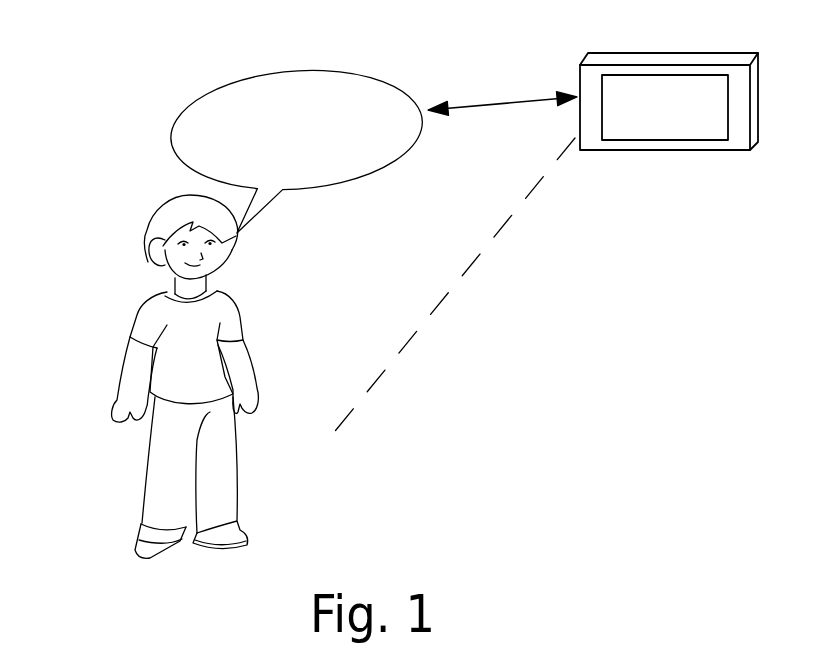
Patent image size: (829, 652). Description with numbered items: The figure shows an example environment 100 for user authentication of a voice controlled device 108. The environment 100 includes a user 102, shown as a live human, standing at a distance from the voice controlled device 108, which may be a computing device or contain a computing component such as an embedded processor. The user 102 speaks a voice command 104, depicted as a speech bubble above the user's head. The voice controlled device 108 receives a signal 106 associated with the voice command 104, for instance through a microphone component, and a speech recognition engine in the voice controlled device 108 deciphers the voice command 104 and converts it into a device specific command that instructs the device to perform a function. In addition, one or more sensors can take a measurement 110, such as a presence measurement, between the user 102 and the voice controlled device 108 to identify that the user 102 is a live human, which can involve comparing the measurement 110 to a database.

The environment 100 is at (117, 42).
The user 102 is at (152, 212).
The voice command 104 is at (267, 75).
The signal 106 is at (491, 103).
The voice controlled device 108 is at (667, 52).
The measurement 110 is at (475, 262).